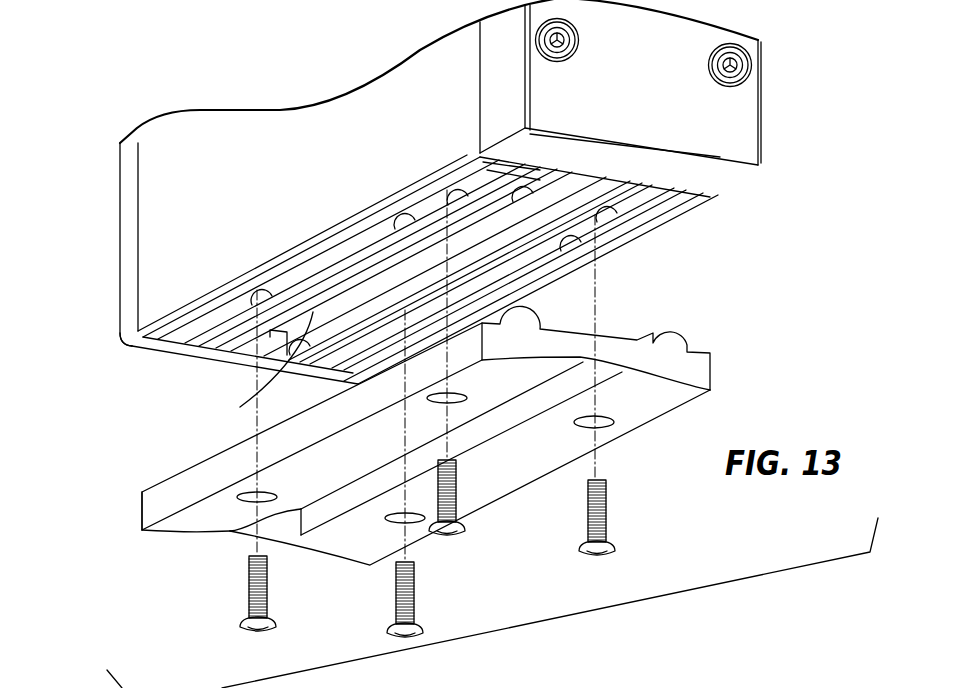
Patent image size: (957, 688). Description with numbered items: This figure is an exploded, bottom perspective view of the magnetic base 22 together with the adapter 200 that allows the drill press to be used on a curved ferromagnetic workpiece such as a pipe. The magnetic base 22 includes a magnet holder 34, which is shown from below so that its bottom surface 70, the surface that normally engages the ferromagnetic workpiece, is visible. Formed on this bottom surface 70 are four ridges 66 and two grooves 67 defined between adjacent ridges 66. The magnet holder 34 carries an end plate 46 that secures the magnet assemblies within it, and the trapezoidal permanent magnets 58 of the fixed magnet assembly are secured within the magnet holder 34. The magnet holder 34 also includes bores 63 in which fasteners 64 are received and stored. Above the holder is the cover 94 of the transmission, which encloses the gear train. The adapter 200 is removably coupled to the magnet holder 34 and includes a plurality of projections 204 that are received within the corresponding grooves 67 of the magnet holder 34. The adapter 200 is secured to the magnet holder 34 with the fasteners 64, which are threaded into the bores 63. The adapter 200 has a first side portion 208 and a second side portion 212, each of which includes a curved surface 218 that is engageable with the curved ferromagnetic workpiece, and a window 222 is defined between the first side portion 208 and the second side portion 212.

The magnetic base 22 is at (84, 274).
The magnet holder 34 is at (310, 130).
The end plate 46 is at (130, 313).
The trapezoidal permanent magnets 58 is at (313, 320).
The bores 63 is at (277, 333).
The fasteners 64 is at (245, 607).
The ridges 66 is at (465, 178).
The grooves 67 is at (400, 230).
The bottom surface 70 is at (158, 335).
The cover 94 is at (742, 128).
The adapter 200 is at (743, 366).
The projections 204 is at (530, 322).
The first side portion 208 is at (339, 568).
The second side portion 212 is at (128, 519).
The curved surface 218 is at (537, 437).
The window 222 is at (243, 543).